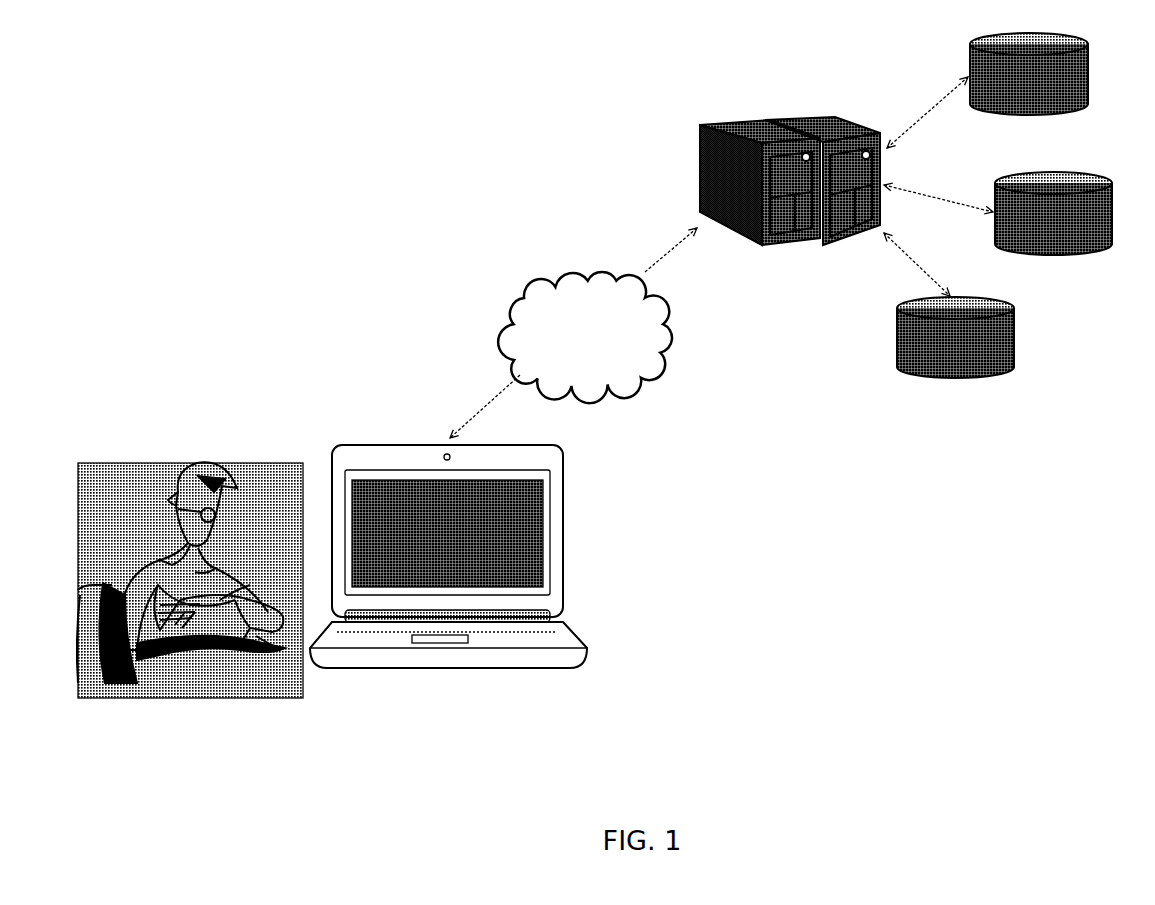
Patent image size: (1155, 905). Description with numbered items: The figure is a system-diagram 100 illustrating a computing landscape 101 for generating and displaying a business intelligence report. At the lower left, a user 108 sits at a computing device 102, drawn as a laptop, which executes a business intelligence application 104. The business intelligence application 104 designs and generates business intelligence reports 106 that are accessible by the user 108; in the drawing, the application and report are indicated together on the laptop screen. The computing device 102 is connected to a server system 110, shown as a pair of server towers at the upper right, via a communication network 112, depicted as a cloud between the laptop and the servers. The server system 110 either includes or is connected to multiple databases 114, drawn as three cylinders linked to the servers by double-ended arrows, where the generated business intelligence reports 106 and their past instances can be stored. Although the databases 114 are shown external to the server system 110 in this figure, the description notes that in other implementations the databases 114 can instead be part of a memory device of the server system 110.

The system-diagram 100 is at (203, 113).
The computing landscape 101 is at (287, 245).
The computing device 102 is at (553, 645).
The business intelligence application 104 is at (527, 555).
The business intelligence reports 106 is at (504, 535).
The user 108 is at (190, 580).
The server system 110 is at (846, 186).
The communication network 112 is at (573, 333).
The databases 114 is at (1026, 205).